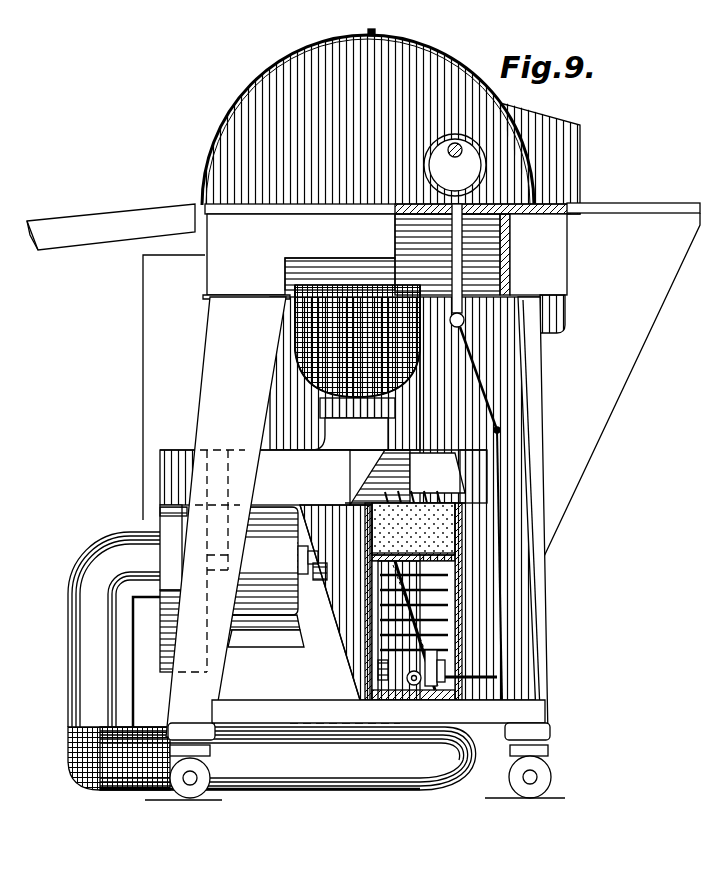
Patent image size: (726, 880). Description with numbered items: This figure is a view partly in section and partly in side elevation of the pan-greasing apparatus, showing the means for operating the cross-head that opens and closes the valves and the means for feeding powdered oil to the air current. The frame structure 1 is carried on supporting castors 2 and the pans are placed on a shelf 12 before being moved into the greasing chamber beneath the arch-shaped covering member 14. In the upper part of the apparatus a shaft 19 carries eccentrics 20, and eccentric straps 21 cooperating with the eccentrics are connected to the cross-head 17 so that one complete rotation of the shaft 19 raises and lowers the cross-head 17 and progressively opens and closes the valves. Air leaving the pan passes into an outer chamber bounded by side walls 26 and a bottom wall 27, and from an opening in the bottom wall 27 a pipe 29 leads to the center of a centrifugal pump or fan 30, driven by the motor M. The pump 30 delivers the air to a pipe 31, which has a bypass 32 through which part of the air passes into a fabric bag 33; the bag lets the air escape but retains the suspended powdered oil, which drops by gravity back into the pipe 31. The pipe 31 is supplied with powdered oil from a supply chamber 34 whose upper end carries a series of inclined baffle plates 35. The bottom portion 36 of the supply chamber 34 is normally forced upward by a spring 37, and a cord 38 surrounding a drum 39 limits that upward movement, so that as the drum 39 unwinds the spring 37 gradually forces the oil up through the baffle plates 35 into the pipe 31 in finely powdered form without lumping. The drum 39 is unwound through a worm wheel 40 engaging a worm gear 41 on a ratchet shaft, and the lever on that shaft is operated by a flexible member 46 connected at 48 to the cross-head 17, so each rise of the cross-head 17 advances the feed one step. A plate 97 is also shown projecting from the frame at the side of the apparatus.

The frame structure 1 is at (143, 338).
The supporting castors 2 is at (548, 782).
The shelf 12 is at (658, 205).
The arch-shaped covering member 14 is at (292, 68).
The cross-head 17 is at (462, 313).
The shaft 19 is at (460, 149).
The eccentrics 20 is at (470, 158).
The eccentric straps 21 is at (486, 184).
The side walls 26 is at (292, 426).
The bottom wall 27 is at (500, 432).
The pipe 29 is at (476, 766).
The centrifugal pump or fan 30 is at (165, 530).
The pipe 31 is at (323, 477).
The bypass 32 is at (351, 437).
The fabric bag 33 is at (310, 320).
The supply chamber 34 is at (440, 522).
The inclined baffle plates 35 is at (436, 476).
The bottom portion 36 is at (456, 560).
The spring 37 is at (378, 622).
The cord 38 is at (456, 612).
The drum 39 is at (432, 690).
The worm wheel 40 is at (372, 683).
The worm gear 41 is at (405, 690).
The flexible member 46 is at (505, 460).
The connection 48 is at (465, 322).
The shelf plate 97 is at (95, 223).
The motor M is at (277, 577).